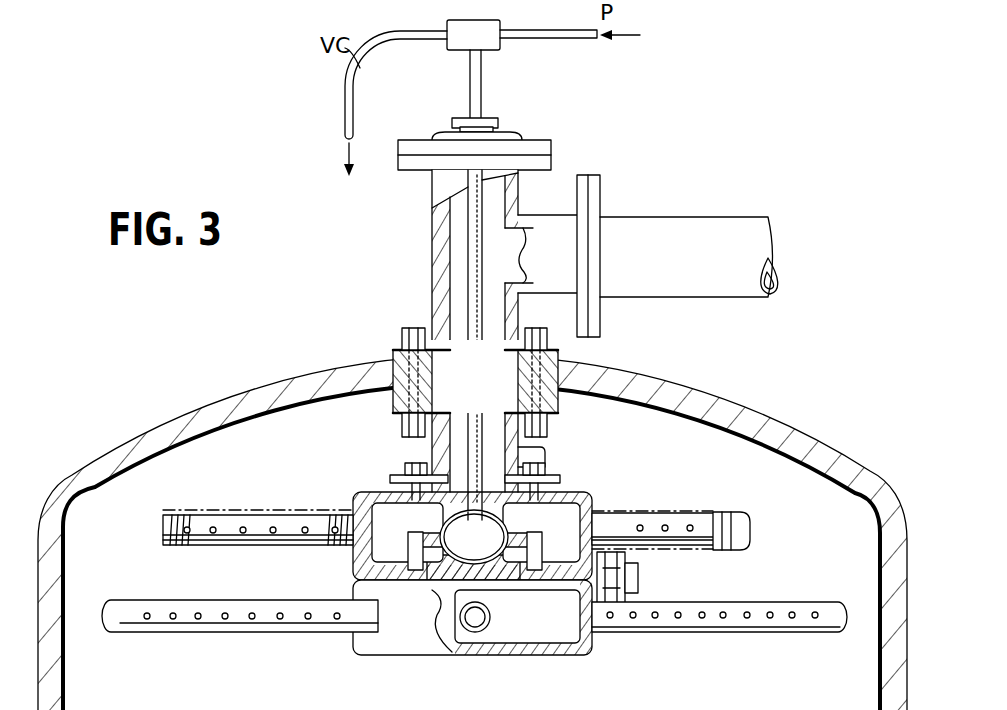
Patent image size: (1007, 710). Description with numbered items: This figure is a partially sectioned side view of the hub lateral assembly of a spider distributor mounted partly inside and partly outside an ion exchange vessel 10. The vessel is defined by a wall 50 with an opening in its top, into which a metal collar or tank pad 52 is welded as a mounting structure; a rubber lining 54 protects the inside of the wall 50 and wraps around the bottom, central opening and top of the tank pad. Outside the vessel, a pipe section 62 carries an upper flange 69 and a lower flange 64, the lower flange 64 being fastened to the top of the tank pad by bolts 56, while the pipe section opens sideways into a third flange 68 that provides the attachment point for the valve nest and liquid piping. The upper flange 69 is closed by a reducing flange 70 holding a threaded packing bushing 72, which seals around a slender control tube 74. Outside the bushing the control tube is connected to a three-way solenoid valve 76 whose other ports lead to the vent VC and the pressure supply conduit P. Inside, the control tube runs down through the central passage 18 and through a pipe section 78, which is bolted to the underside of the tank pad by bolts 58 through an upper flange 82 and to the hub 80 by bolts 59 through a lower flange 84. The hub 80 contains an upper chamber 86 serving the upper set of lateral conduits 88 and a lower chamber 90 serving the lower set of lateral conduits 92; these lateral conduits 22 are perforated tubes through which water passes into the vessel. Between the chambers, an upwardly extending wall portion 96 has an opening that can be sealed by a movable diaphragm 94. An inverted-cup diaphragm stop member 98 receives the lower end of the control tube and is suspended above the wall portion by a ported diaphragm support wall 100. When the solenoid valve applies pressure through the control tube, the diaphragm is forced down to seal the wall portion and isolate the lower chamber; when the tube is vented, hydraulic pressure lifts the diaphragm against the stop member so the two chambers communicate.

The exchange vessel 10 is at (472, 532).
The central passage 18 is at (462, 317).
The lateral conduits 22 is at (237, 613).
The vessel wall 50 is at (797, 437).
The tank pad 52 is at (400, 396).
The rubber coating or lining 54 is at (240, 428).
The mounting bolts 56 is at (400, 330).
The mounting bolts 58 is at (410, 437).
The bolts 59 is at (400, 468).
The pipe section 62 is at (440, 250).
The lower flange 64 is at (392, 352).
The third flange 68 is at (590, 353).
The upper flange 69 is at (550, 162).
The reducing flange 70 is at (550, 147).
The packing bushing 72 is at (500, 122).
The control tube 74 is at (480, 212).
The three-way solenoid valve 76 is at (487, 43).
The pipe section 78 is at (528, 452).
The hub 80 is at (441, 525).
The upper flange 82 is at (395, 422).
The lower flange 84 is at (548, 478).
The upper chamber 86 is at (574, 542).
The upper set of lateral conduits 88 is at (673, 512).
The lower chamber 90 is at (472, 638).
The lower set of lateral conduits 92 is at (745, 633).
The diaphragm 94 is at (445, 630).
The wall portion 96 is at (505, 604).
The diaphragm stop member 98 is at (440, 514).
The diaphragm support wall 100 is at (542, 572).